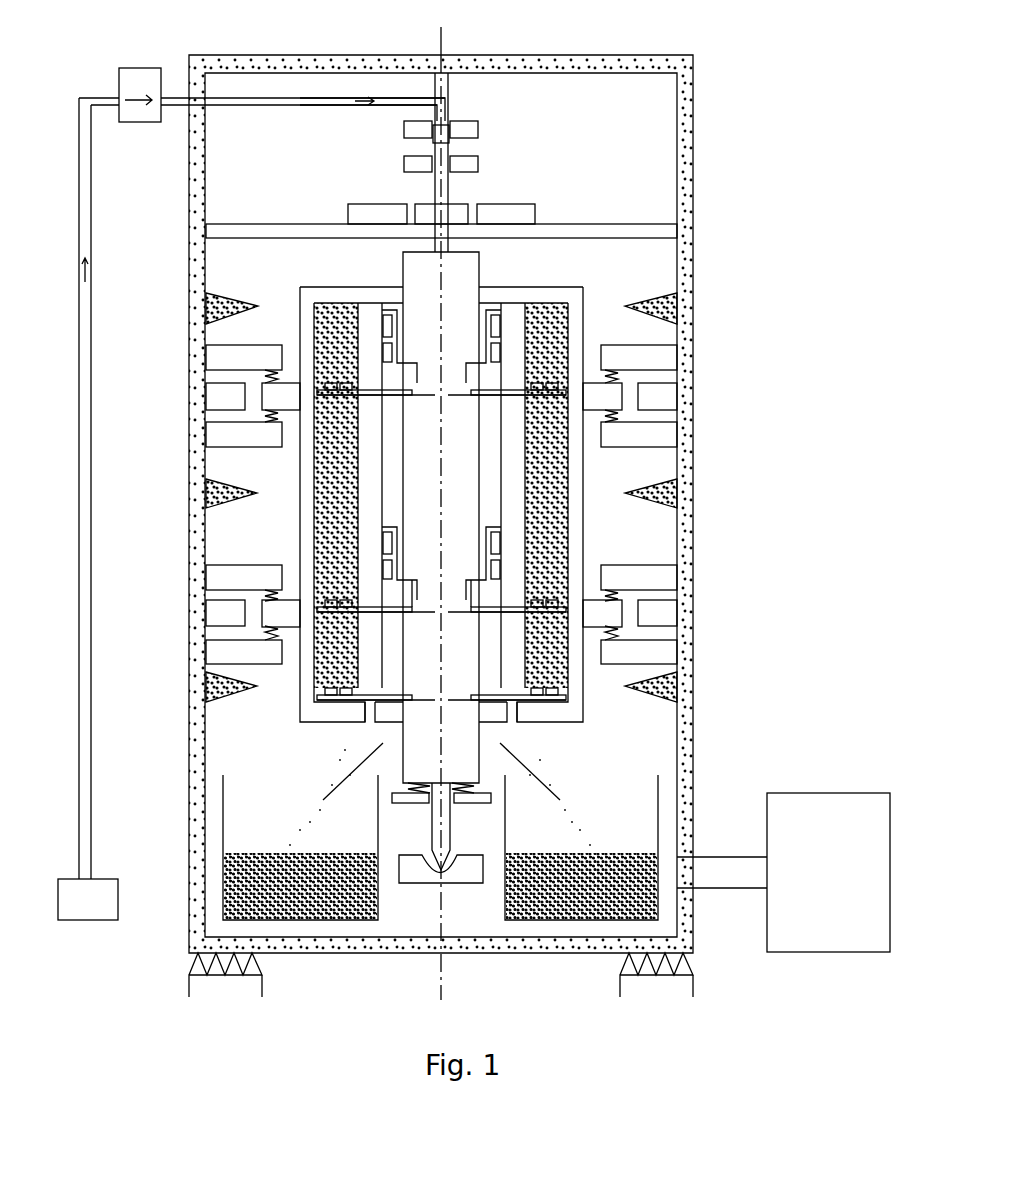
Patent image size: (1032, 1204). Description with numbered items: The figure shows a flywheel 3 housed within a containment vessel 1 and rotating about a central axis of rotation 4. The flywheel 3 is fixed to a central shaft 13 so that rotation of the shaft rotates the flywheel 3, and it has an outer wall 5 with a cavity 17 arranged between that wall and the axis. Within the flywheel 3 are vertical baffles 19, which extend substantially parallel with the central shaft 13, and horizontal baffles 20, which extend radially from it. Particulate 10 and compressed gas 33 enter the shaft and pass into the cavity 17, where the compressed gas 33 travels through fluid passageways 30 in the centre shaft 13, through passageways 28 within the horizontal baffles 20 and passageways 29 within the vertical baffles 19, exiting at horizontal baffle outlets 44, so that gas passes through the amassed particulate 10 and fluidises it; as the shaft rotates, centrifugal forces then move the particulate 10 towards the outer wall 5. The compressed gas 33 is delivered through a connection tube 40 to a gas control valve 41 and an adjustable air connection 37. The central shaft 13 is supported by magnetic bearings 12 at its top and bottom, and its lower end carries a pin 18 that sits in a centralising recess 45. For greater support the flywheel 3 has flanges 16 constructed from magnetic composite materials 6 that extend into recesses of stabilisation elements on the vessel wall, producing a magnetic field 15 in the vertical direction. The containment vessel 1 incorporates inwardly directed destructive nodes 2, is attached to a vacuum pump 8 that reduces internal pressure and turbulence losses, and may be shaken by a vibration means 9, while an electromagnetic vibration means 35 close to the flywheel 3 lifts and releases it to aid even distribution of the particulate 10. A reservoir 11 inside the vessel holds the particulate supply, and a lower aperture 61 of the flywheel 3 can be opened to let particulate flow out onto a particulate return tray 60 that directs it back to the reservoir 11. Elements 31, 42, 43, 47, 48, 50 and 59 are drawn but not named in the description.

The containment vessel 1 is at (685, 432).
The inwardly directed destructive node 2 is at (258, 306).
The flywheel 3 is at (480, 270).
The central axis of rotation 4 is at (443, 42).
The outer wall 5 is at (583, 523).
The magnetic composite materials 6 is at (243, 615).
The vacuum pump 8 is at (822, 793).
The vibration means 9 is at (189, 975).
The particulate 10 is at (330, 495).
The reservoir 11 is at (223, 840).
The magnetic bearing 12 is at (535, 204).
The central shaft 13 is at (565, 287).
The magnetic field 15 is at (620, 382).
The flange 16 is at (603, 602).
The cavity 17 is at (513, 487).
The pin 18 is at (452, 828).
The vertical baffle 19 is at (387, 463).
The horizontal baffle 20 is at (517, 593).
The passageway 28 is at (530, 390).
The passageway 29 is at (395, 335).
The fluid passageway 30 is at (587, 405).
The gas source 31 is at (103, 879).
The compressed gas 33 is at (360, 100).
The vibration means 35 is at (495, 800).
The adjustable air connection 37 is at (450, 135).
The connection tube 40 is at (91, 276).
The gas control valve 41 is at (140, 68).
The upper bearing 42 is at (478, 132).
The shaft 43 is at (447, 157).
The horizontal baffle outlet 44 is at (550, 600).
The centralising recess 45 is at (438, 870).
The support bracket 47 is at (380, 365).
The gas inlet line 48 is at (405, 100).
The lower bearing 50 is at (478, 164).
The top plate 59 is at (250, 223).
The particulate return tray 60 is at (350, 775).
The lower aperture 61 is at (365, 720).